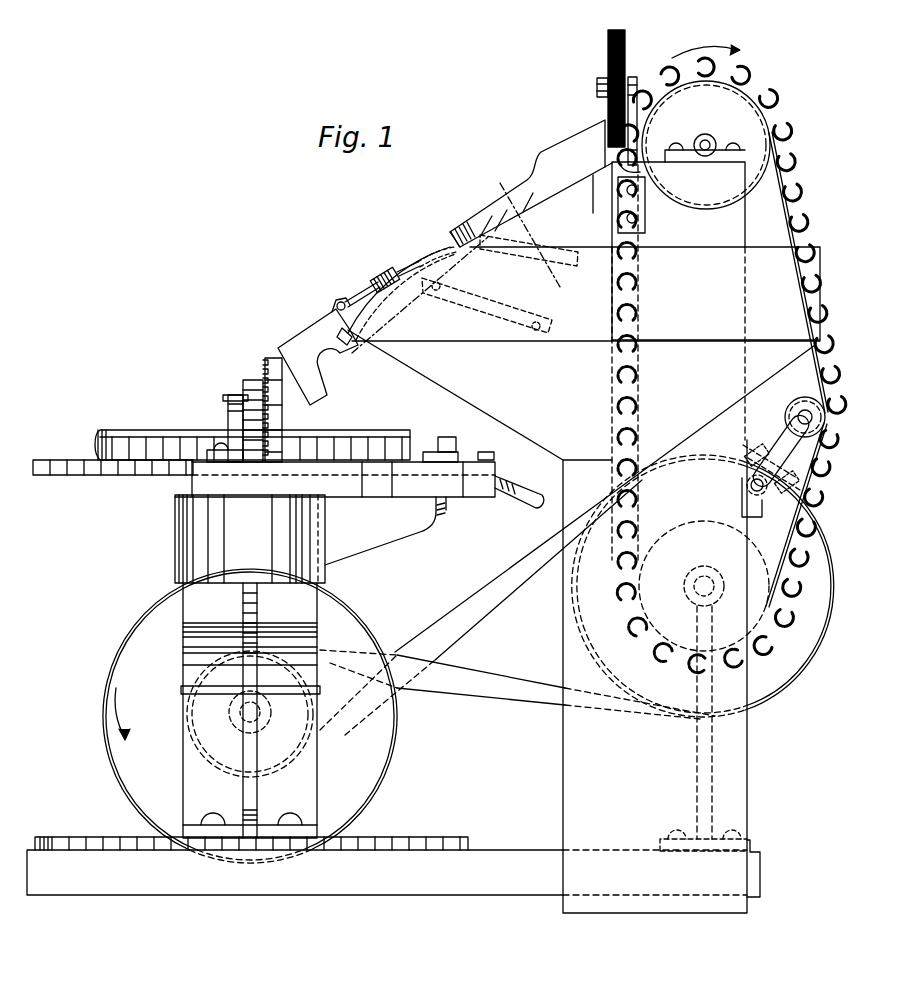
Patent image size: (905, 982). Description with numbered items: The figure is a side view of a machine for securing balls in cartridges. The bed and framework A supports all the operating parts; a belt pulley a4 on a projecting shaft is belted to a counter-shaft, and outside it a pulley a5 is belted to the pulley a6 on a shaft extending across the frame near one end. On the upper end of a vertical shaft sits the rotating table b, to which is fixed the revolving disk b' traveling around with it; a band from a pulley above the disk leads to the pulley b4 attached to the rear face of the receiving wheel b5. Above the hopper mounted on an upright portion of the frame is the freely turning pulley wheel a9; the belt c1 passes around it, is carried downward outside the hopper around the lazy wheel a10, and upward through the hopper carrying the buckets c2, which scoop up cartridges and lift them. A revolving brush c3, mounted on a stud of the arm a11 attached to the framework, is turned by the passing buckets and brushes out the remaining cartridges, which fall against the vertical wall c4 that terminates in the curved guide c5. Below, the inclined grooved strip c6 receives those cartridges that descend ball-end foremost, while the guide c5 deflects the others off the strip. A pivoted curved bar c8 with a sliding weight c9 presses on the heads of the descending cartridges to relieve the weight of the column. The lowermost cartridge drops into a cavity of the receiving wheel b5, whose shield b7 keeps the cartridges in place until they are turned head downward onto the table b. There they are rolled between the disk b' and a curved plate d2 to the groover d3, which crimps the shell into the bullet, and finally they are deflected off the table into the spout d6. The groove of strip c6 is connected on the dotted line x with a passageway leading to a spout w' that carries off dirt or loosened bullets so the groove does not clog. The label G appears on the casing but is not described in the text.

The bed and framework A is at (423, 537).
The casing box G is at (716, 318).
The belt pulley a4 is at (394, 735).
The pulley a5 is at (756, 562).
The pulley a6 is at (703, 586).
The pulley wheel a9 is at (694, 139).
The lazy wheel a10 is at (804, 403).
The arm a11 is at (633, 80).
The table b is at (264, 470).
The revolving disk b' is at (252, 438).
The pulley b4 is at (236, 393).
The receiving wheel b5 is at (268, 358).
The shield b7 is at (292, 416).
The belt c1 is at (830, 350).
The buckets c2 is at (735, 365).
The revolving brush c3 is at (626, 34).
The vertical wall c4 is at (531, 183).
The curved guide c5 is at (466, 226).
The grooved strip c6 is at (367, 326).
The curved bar c8 is at (410, 266).
The sliding weight c9 is at (384, 274).
The curved plate d2 is at (480, 452).
The groover d3 is at (440, 452).
The spout d6 is at (521, 493).
The dotted line X X x is at (457, 263).
The spout w' is at (510, 284).